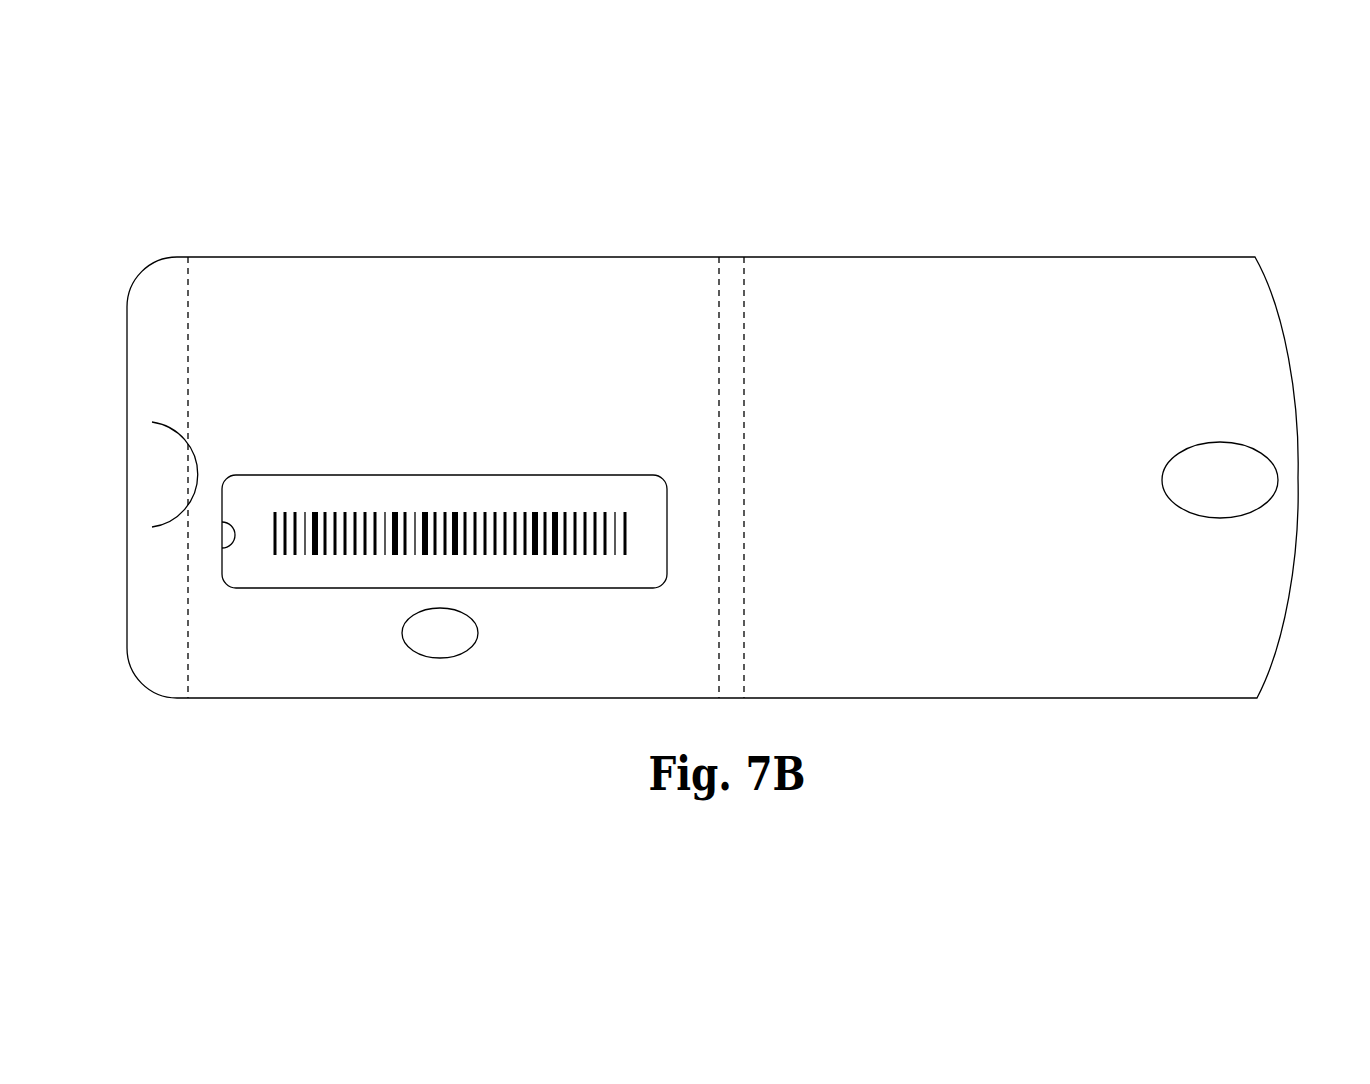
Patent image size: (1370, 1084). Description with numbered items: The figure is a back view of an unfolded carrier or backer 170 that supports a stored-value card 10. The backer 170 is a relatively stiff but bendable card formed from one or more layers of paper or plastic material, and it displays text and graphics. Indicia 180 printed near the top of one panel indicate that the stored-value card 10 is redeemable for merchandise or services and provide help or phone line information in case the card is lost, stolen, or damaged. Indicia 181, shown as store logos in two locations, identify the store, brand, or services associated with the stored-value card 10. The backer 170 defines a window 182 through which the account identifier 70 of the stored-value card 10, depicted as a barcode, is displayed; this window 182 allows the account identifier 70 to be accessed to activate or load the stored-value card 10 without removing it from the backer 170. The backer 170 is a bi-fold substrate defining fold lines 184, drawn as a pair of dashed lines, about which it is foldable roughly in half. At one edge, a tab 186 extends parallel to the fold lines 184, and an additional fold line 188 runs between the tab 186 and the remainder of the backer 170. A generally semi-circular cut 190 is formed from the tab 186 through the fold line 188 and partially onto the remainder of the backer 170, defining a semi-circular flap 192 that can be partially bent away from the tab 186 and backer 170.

The backer 170 is at (1162, 220).
The indicia 180 is at (569, 292).
The fold lines 184 is at (716, 269).
The tab 186 is at (158, 367).
The fold line 188 is at (188, 670).
The semi-circular flap 192 is at (188, 465).
The semi-circular cut 190 is at (168, 522).
The window 182 is at (222, 552).
The stored-value card 10 is at (368, 617).
The account identifier 70 is at (310, 556).
The indicia 181 is at (471, 644).